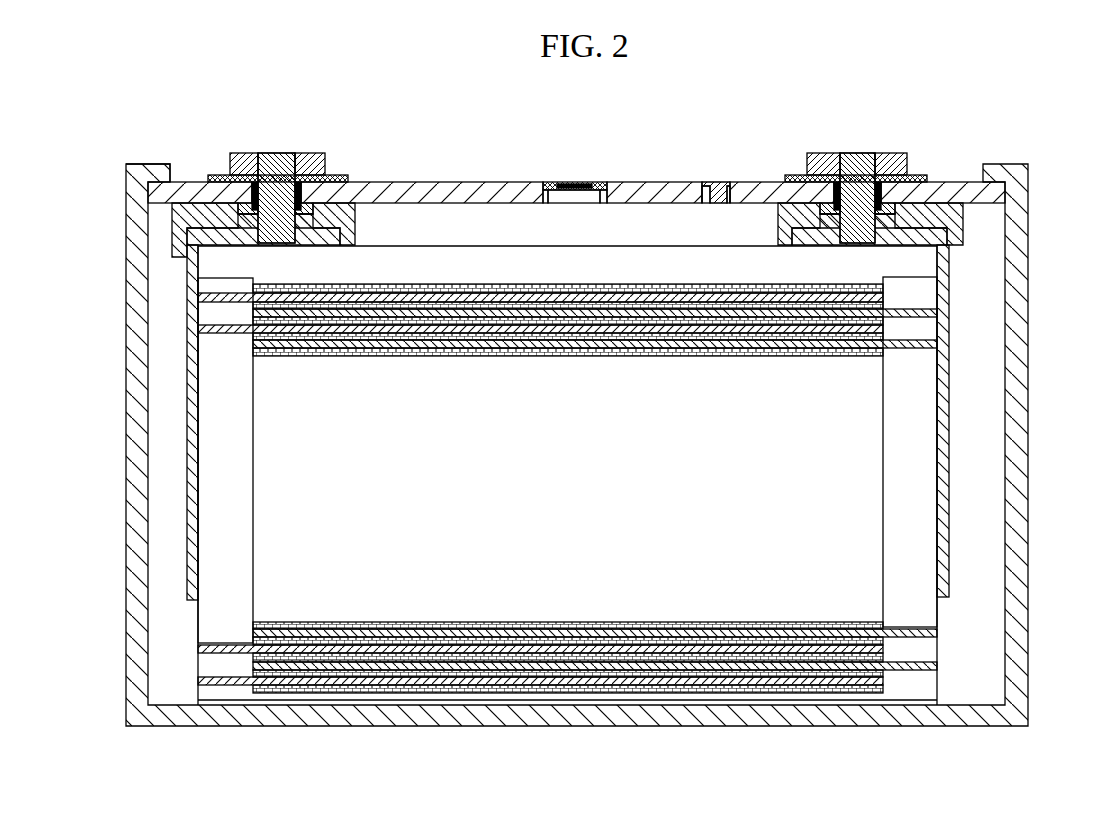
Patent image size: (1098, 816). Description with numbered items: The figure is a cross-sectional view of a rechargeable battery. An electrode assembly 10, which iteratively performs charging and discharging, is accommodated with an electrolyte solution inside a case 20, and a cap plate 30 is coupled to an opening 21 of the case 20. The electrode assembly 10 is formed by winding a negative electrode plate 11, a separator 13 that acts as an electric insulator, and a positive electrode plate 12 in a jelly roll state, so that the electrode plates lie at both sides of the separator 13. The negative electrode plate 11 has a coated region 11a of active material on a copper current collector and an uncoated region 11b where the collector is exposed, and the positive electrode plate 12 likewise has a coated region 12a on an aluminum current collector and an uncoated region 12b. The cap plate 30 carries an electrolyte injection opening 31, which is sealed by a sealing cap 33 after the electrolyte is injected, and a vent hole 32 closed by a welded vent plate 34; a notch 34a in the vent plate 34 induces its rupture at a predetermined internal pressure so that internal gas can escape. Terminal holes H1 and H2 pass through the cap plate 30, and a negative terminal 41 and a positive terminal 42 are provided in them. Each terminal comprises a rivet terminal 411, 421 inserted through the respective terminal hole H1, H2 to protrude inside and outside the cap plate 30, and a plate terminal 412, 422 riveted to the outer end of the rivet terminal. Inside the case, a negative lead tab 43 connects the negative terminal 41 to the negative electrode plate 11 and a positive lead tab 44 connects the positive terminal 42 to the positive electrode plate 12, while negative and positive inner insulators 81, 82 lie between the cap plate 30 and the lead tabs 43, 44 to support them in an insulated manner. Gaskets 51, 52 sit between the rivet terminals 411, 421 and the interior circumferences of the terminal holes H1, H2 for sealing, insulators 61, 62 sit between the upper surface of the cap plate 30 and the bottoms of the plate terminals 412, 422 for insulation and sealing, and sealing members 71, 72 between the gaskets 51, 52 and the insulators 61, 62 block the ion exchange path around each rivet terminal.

The electrode assembly 10 is at (628, 696).
The negative electrode plate 11 is at (355, 772).
The coated region of negative electrode plate 11a is at (330, 686).
The uncoated region of negative electrode plate 11b is at (243, 682).
The positive electrode plate 12 is at (932, 772).
The coated region of positive electrode plate 12a is at (820, 690).
The uncoated region of positive electrode plate 12b is at (902, 665).
The separator 13 is at (553, 690).
The case 20 is at (1017, 448).
The opening 21 is at (154, 190).
The cap plate 30 is at (655, 192).
The electrolyte injection opening 31 is at (705, 192).
The vent hole 32 is at (578, 197).
The sealing cap 33 is at (718, 185).
The vent plate 34 is at (600, 186).
The notch 34a is at (560, 184).
The negative terminal 41 is at (353, 107).
The rivet terminal 411 is at (277, 162).
The plate terminal 412 is at (316, 160).
The positive terminal 42 is at (935, 107).
The rivet terminal 421 is at (858, 162).
The plate terminal 422 is at (890, 160).
The negative lead tab 43 is at (190, 405).
The positive lead tab 44 is at (943, 530).
The gasket 51 is at (254, 214).
The gasket 52 is at (835, 207).
The insulator 61 is at (247, 200).
The insulator 62 is at (822, 203).
The sealing member 71 is at (320, 178).
The sealing member 72 is at (888, 178).
The negative inner insulator 81 is at (200, 215).
The positive inner insulator 82 is at (963, 233).
The terminal hole H1 is at (300, 190).
The terminal hole H2 is at (868, 190).